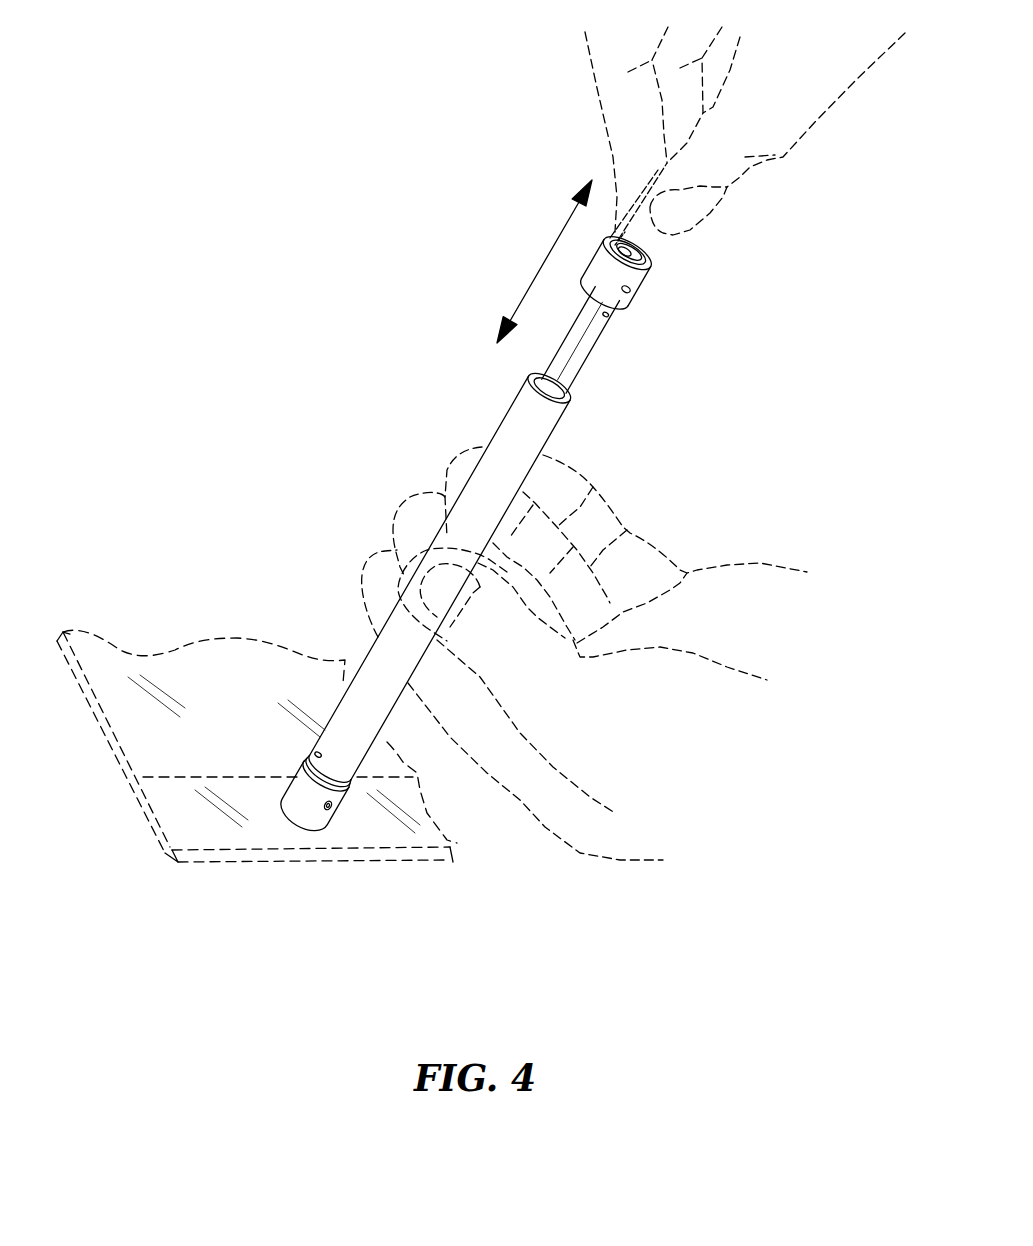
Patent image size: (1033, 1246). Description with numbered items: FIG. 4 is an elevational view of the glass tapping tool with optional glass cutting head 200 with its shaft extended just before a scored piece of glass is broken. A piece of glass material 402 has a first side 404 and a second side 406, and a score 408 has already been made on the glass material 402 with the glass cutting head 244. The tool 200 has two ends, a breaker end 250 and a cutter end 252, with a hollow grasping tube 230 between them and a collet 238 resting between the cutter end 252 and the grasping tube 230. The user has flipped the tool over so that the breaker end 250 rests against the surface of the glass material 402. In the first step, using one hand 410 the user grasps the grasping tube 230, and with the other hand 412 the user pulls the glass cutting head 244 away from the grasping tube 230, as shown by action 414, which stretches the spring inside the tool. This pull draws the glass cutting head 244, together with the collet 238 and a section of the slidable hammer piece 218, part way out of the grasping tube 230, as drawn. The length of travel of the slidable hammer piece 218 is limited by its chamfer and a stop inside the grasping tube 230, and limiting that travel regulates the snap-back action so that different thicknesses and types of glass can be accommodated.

The glass tapping tool with optional glass cutting head 200 is at (396, 1031).
The slidable hammer piece 218 is at (582, 372).
The grasping tube 230 is at (500, 447).
The collet 238 is at (632, 302).
The glass cutting head 244 is at (653, 243).
The breaker end 250 is at (327, 823).
The cutter end 252 is at (662, 168).
The glass material 402 is at (170, 852).
The first side 404 is at (220, 830).
The second side 406 is at (90, 717).
The score 408 is at (183, 777).
The hand 410 is at (383, 533).
The other hand 412 is at (596, 88).
The action 414 is at (538, 273).